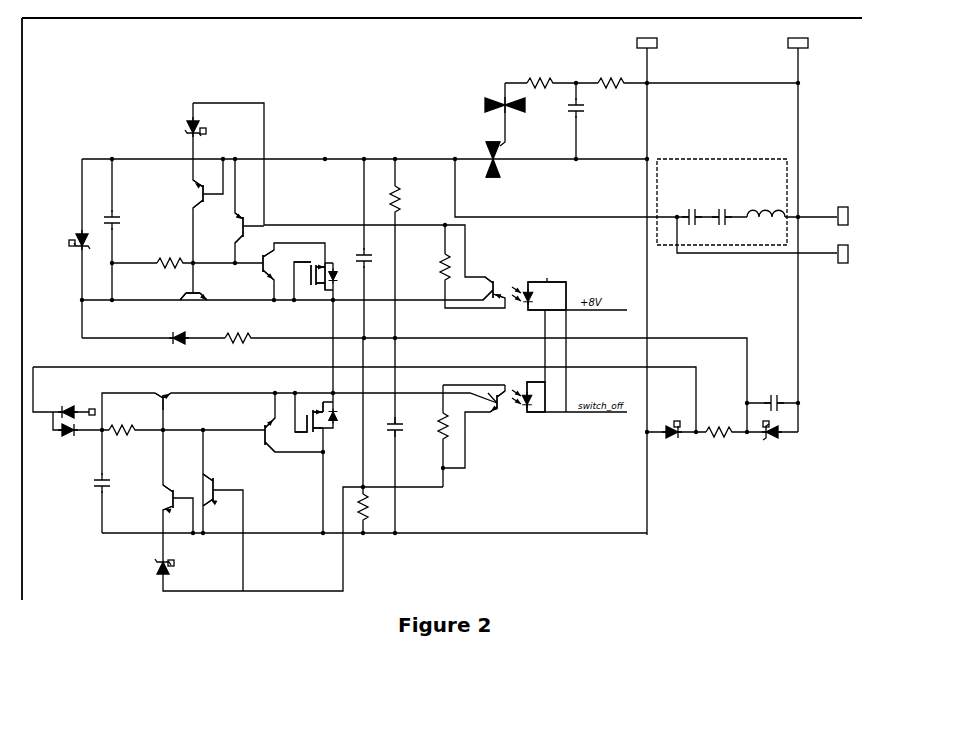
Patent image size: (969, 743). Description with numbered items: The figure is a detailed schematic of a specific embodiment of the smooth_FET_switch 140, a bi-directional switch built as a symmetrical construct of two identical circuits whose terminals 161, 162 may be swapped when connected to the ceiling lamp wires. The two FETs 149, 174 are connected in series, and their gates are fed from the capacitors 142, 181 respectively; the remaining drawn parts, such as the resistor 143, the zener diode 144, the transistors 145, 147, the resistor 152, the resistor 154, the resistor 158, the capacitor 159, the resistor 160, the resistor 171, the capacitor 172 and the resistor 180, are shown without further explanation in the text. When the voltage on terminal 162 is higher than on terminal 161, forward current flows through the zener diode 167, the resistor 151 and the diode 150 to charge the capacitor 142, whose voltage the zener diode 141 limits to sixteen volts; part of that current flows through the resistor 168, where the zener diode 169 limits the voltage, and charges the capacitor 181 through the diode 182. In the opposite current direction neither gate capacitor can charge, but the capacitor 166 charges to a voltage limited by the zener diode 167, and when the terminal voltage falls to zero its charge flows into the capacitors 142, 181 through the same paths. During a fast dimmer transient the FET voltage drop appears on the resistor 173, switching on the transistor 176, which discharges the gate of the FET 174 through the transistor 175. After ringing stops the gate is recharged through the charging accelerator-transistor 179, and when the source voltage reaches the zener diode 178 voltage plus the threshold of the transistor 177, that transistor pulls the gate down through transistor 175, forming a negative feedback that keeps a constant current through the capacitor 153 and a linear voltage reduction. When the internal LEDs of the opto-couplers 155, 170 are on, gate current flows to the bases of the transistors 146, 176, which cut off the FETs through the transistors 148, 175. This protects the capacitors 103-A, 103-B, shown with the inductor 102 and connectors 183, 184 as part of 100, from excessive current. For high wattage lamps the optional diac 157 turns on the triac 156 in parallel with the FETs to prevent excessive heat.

The smooth_FET_switch 140 is at (442, 309).
The zener diode 141 is at (78, 228).
The capacitor 142 is at (123, 216).
The resistor 143 is at (171, 257).
The zener diode 144 is at (204, 123).
The transistor 145 is at (212, 197).
The transistor 146 is at (250, 223).
The transistor 147 is at (201, 289).
The transistor 148 is at (260, 265).
The FET 149 is at (316, 268).
The diode 150 is at (184, 331).
The resistor 151 is at (239, 331).
The resistor 152 is at (433, 268).
The capacitor 153 is at (374, 258).
The resistor 154 is at (398, 200).
The opto-coupler 155 is at (513, 296).
The triac 156 is at (498, 169).
The diac 157 is at (510, 115).
The resistor 158 is at (541, 76).
The capacitor 159 is at (573, 114).
The resistor 160 is at (612, 76).
The terminal 161 is at (648, 43).
The terminal 162 is at (799, 43).
The lamp circuit (part of) 100 is at (722, 202).
The capacitor 103-A is at (683, 209).
The capacitor 103-B is at (728, 211).
The inductor 102 is at (766, 207).
The connector 183 is at (841, 208).
The connector 184 is at (841, 246).
The capacitor 166 is at (773, 396).
The zener diode 167 is at (783, 429).
The resistor 168 is at (720, 425).
The zener diode 169 is at (667, 425).
The opto-coupler 170 is at (504, 391).
The resistor 171 is at (433, 427).
The capacitor 172 is at (403, 423).
The resistor 173 is at (369, 508).
The FET 174 is at (316, 415).
The transistor 175 is at (261, 430).
The transistor 176 is at (221, 490).
The transistor 177 is at (182, 494).
The zener diode 178 is at (173, 561).
The charging accelerator-transistor 179 is at (173, 404).
The resistor 180 is at (130, 424).
The capacitor 181 is at (111, 481).
The diode 182 is at (62, 428).